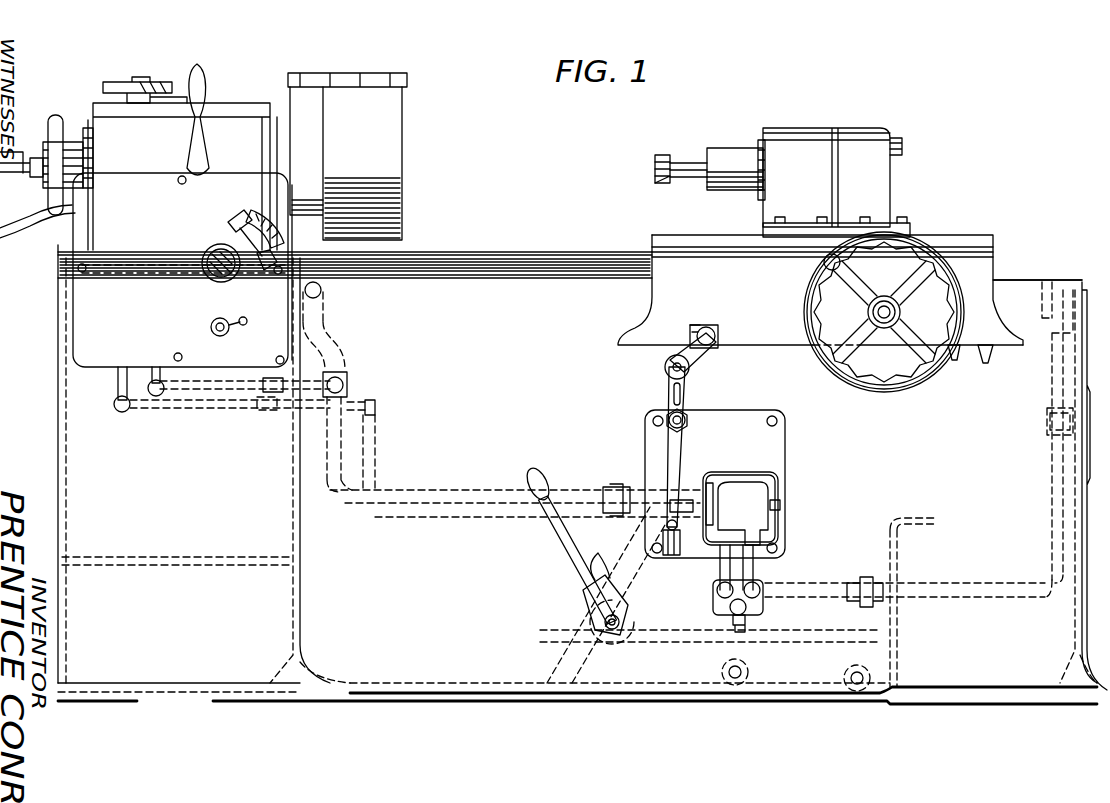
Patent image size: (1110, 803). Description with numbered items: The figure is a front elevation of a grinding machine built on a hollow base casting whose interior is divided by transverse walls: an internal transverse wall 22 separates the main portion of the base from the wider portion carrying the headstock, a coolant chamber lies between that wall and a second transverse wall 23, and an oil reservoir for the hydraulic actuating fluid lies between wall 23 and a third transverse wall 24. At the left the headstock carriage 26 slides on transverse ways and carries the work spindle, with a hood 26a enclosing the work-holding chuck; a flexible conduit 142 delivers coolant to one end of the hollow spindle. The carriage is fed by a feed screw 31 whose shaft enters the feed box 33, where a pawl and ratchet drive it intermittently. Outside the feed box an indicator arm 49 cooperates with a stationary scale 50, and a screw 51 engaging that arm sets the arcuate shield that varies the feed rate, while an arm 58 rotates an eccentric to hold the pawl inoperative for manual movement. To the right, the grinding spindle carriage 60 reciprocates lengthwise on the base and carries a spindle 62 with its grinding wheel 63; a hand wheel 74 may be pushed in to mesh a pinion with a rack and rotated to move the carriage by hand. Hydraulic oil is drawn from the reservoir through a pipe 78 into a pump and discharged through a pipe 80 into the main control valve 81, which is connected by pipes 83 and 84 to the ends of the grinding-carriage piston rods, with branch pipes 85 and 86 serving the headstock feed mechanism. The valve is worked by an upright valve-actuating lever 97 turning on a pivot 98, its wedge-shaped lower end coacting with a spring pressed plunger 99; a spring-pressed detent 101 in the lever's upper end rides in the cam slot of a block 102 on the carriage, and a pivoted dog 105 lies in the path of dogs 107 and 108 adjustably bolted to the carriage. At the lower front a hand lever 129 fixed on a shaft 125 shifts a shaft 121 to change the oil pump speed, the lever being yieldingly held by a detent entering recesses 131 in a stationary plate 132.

The internal transverse wall 22 is at (290, 452).
The transverse wall 23 is at (590, 632).
The third transverse wall 24 is at (898, 606).
The headstock carriage 26 is at (222, 122).
The hood 26a is at (390, 131).
The feed screw 31 is at (200, 278).
The feed box 33 is at (88, 325).
The indicator arm 49 is at (232, 240).
The stationary scale 50 is at (263, 212).
The screw 51 is at (230, 226).
The arm 58 is at (240, 320).
The grinding spindle carriage 60 is at (675, 243).
The spindle 62 is at (690, 152).
The grinding wheel 63 is at (662, 156).
The hand wheel 74 is at (903, 385).
The pipe 78 is at (722, 688).
The pipe 80 is at (765, 620).
The main control valve 81 is at (750, 492).
The pipe 83 is at (782, 583).
The pipe 84 is at (337, 346).
The branch pipe 85 is at (176, 403).
The branch pipe 86 is at (226, 405).
The valve-actuating lever 97 is at (685, 452).
The pivot 98 is at (682, 415).
The spring pressed plunger 99 is at (645, 540).
The spring-pressed detent 101 is at (720, 336).
The block 102 is at (694, 322).
The pivoted dog 105 is at (690, 386).
The dog 107 is at (955, 362).
The dog 108 is at (988, 362).
The shaft 121 is at (448, 668).
The shaft 125 is at (612, 628).
The hand lever 129 is at (566, 540).
The recesses 131 is at (590, 570).
The stationary plate 132 is at (585, 612).
The flexible conduit 142 is at (37, 230).